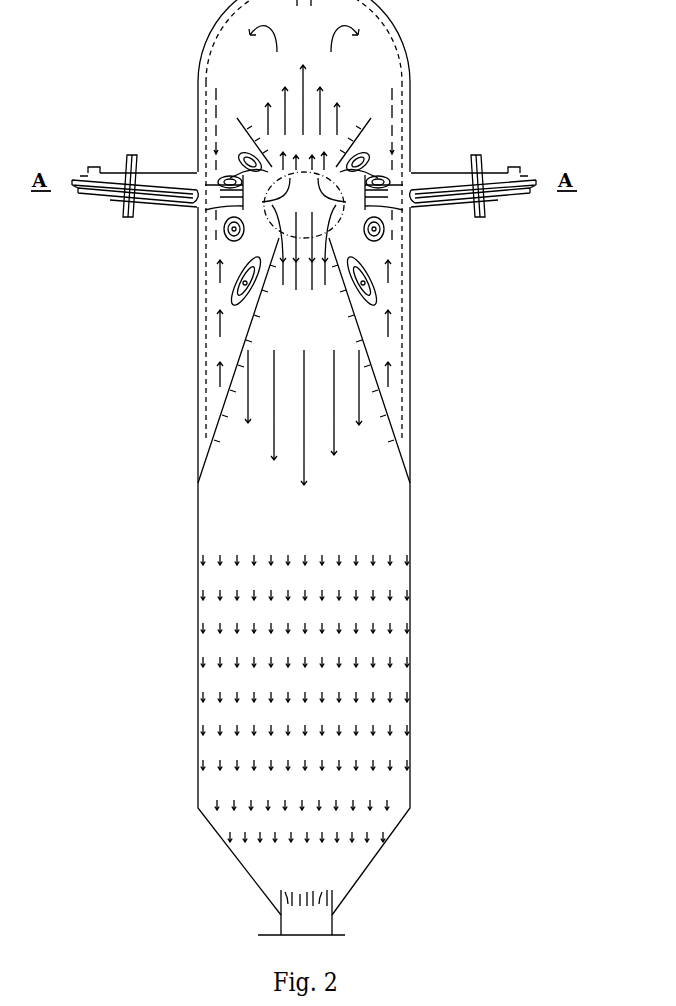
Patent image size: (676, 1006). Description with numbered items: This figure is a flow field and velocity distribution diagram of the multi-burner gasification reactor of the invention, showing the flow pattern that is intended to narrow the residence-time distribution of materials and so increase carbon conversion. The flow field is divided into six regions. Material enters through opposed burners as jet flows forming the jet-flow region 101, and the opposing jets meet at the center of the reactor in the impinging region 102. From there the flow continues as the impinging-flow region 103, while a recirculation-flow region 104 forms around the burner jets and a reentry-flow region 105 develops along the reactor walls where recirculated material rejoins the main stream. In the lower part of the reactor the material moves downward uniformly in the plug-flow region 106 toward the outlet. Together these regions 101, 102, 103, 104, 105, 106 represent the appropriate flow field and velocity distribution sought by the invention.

The jet-flow region 101 is at (212, 194).
The impinging region 102 is at (305, 209).
The impinging-flow region 103 is at (290, 313).
The recirculation-flow region 104 is at (385, 163).
The reentry-flow region 105 is at (218, 118).
The plug-flow region 106 is at (307, 583).